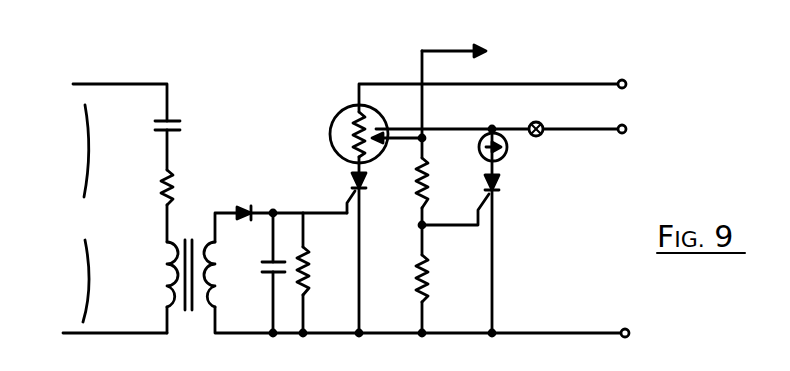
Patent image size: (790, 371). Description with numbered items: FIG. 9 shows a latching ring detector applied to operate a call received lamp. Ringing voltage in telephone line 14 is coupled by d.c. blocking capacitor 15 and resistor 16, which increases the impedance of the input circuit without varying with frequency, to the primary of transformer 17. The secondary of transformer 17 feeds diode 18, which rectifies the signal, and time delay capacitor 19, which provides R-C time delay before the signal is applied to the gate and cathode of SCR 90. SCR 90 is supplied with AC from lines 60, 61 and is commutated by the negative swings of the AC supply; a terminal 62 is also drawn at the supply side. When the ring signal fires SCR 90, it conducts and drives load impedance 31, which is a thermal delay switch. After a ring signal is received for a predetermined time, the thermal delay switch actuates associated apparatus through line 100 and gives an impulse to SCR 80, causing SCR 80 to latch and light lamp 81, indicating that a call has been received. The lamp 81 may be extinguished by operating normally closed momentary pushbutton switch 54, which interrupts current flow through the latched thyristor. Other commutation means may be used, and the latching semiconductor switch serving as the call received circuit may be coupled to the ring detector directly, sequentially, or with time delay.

The telephone line 14 is at (87, 213).
The d.c. blocking capacitor 15 is at (158, 118).
The resistor 16 is at (160, 186).
The transformer 17 is at (160, 270).
The diode 18 is at (237, 193).
The time delay capacitor 19 is at (268, 278).
The load impedance 31 is at (336, 115).
The normally closed momentary pushbutton switch 54 is at (543, 122).
The AC supply line 60 is at (649, 130).
The AC supply line 61 is at (627, 327).
The terminal 62 is at (634, 70).
The SCR 80 is at (504, 186).
The lamp 81 is at (508, 156).
The SCR 90 is at (350, 184).
The line 100 is at (476, 52).